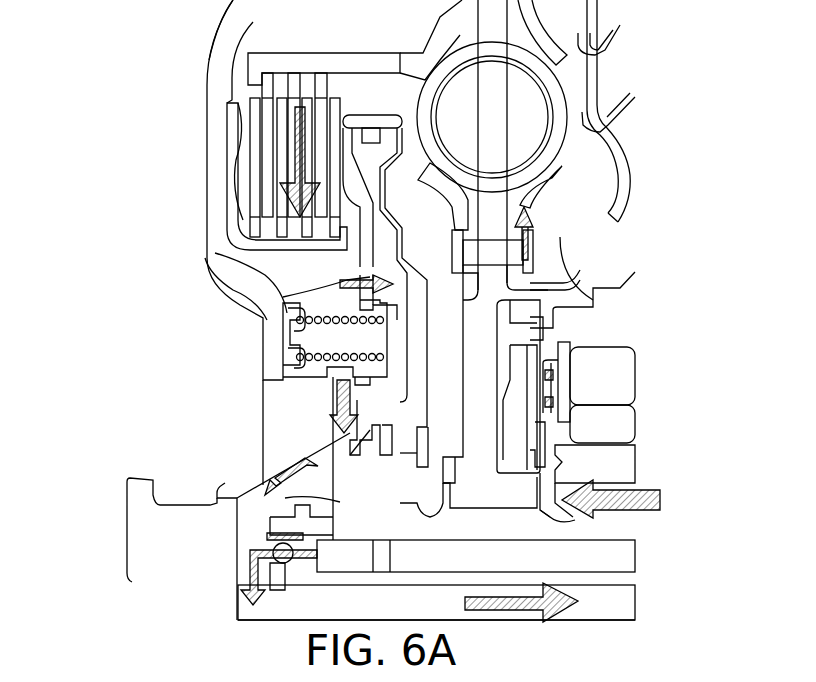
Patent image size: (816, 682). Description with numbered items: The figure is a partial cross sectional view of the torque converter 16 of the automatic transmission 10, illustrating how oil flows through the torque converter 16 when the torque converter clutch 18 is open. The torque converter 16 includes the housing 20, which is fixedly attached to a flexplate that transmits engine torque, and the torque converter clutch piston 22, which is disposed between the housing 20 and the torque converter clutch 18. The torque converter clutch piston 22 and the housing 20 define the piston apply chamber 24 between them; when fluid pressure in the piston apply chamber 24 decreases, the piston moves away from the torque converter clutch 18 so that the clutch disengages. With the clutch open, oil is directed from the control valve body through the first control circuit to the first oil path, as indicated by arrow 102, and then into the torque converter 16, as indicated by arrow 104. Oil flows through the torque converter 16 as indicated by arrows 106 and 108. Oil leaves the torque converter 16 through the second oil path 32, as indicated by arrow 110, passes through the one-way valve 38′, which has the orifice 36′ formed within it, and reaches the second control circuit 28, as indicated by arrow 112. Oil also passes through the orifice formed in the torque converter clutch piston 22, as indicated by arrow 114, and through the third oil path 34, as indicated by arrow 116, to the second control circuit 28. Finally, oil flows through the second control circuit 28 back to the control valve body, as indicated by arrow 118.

The automatic transmission 10 is at (120, 324).
The torque converter 16 is at (203, 80).
The housing 20 is at (223, 46).
The torque converter clutch 18 is at (258, 145).
The arrow 108 is at (292, 177).
The torque converter clutch piston 22 is at (360, 269).
The arrow 114 is at (283, 300).
The arrow 110 is at (333, 410).
The arrow 116 is at (297, 463).
The third oil path 34 is at (263, 490).
The second oil path 32 is at (347, 463).
The arrow 112 is at (250, 570).
The orifice 36′ is at (277, 573).
The one-way valve 38′ is at (293, 570).
The second control circuit 28 is at (625, 600).
The arrow 118 is at (513, 603).
The arrow 102 is at (607, 497).
The arrow 104 is at (557, 502).
The arrow 106 is at (533, 245).
The piston apply chamber 24 is at (400, 352).